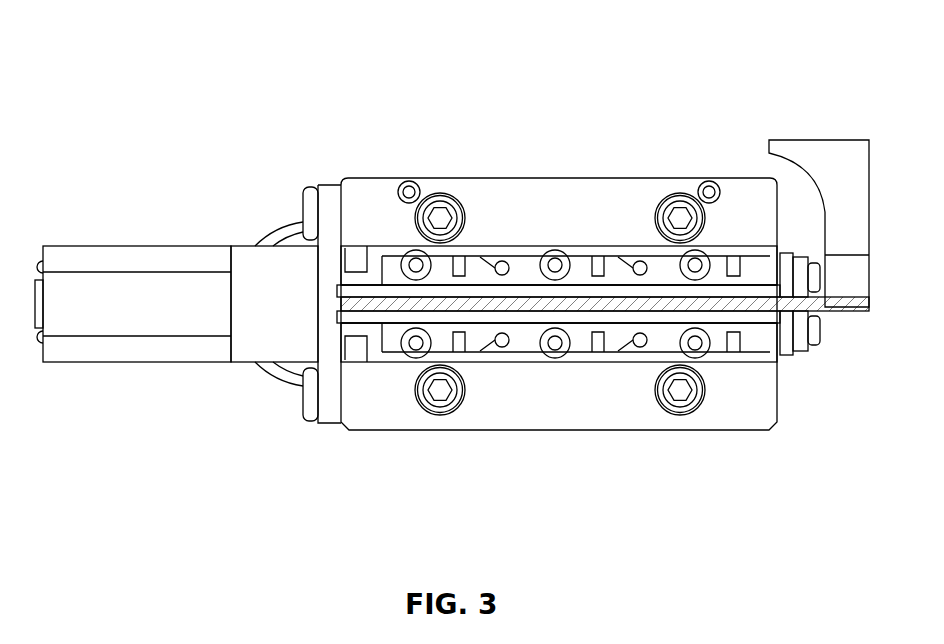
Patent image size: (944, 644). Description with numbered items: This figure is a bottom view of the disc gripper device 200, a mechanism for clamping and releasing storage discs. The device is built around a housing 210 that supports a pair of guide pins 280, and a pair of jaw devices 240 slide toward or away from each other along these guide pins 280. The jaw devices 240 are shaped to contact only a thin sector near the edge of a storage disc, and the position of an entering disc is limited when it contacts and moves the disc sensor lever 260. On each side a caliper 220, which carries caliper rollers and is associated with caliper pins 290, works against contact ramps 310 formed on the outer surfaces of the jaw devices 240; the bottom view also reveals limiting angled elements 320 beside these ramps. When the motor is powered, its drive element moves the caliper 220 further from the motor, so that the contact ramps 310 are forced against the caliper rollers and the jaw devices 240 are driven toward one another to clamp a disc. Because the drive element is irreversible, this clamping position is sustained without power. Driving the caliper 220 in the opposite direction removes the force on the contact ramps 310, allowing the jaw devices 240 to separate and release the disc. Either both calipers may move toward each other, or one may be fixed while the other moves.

The disc gripper device 200 is at (463, 44).
The housing 210 is at (745, 425).
The caliper 220 is at (383, 253).
The jaw devices 240 is at (593, 317).
The disc sensor lever 260 is at (848, 283).
The guide pins 280 is at (695, 262).
The caliper pins 290 is at (510, 338).
The contact ramps 310 is at (432, 196).
The limiting angled elements 320 is at (477, 253).